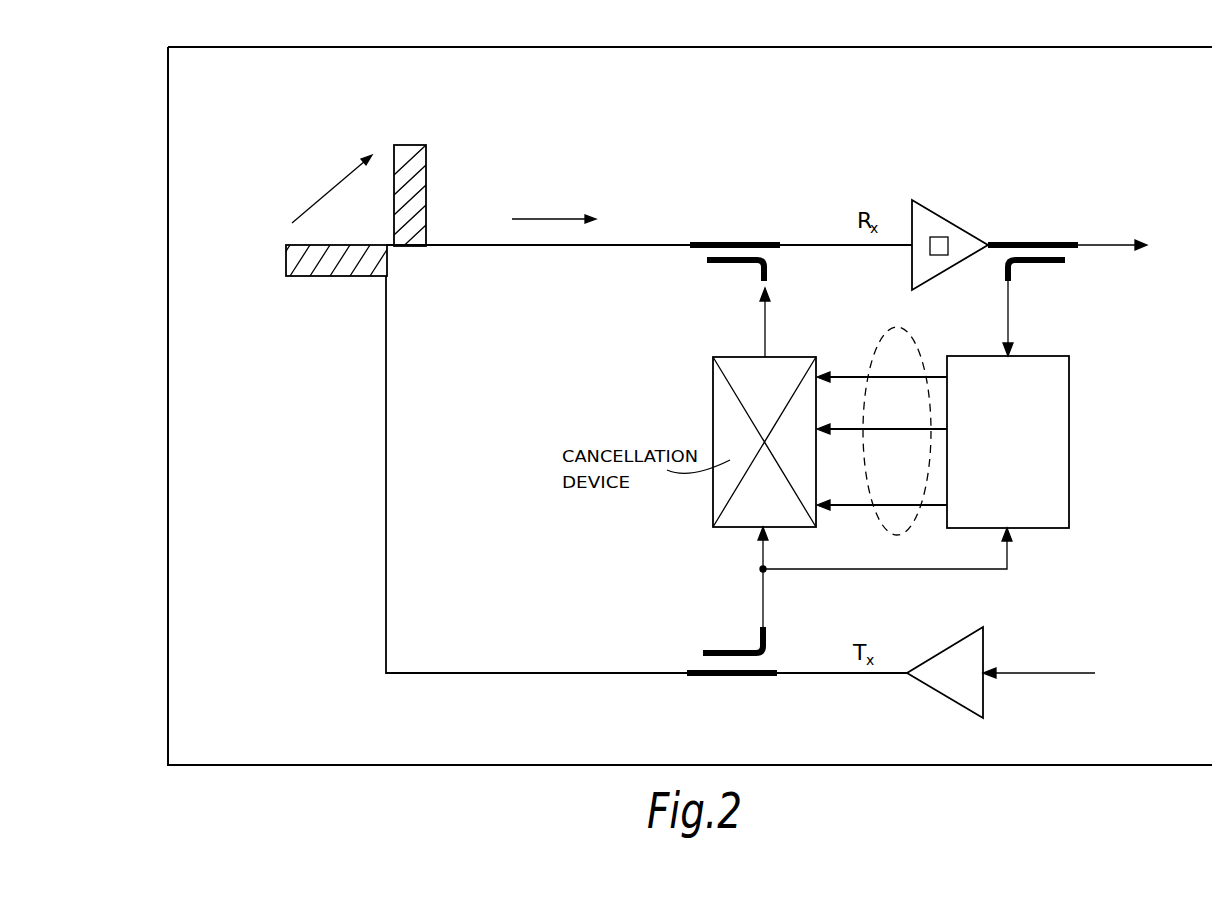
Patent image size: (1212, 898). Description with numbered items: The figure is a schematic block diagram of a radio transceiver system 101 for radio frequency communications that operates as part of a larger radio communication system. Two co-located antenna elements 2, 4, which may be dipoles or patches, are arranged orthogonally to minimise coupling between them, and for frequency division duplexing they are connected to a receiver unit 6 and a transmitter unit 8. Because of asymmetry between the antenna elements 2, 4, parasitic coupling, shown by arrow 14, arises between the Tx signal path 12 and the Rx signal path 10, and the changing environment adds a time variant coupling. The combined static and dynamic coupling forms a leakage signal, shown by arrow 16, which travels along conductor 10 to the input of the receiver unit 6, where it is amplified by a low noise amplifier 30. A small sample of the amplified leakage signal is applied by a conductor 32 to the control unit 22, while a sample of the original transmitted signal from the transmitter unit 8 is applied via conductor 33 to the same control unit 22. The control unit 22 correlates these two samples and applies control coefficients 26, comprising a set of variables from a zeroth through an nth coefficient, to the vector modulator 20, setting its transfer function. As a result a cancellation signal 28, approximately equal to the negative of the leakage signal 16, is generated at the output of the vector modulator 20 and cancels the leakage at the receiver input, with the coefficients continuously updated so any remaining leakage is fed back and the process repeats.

The radio transceiver system 101 is at (607, 47).
The antenna element 2 is at (331, 276).
The antenna element 4 is at (426, 160).
The receiver unit 6 is at (941, 214).
The transmitter unit 8 is at (945, 700).
The Rx signal path 10 is at (547, 246).
The Tx signal path 12 is at (532, 672).
The parasitic coupling 14 is at (336, 185).
The leakage signal 16 is at (560, 219).
The vector modulator 20 is at (713, 409).
The control unit 22 is at (1070, 428).
The control coefficients 26 is at (893, 332).
The cancellation signal 28 is at (762, 317).
The low noise amplifier 30 is at (936, 255).
The conductor 32 is at (1010, 300).
The conductor 33 is at (1010, 560).